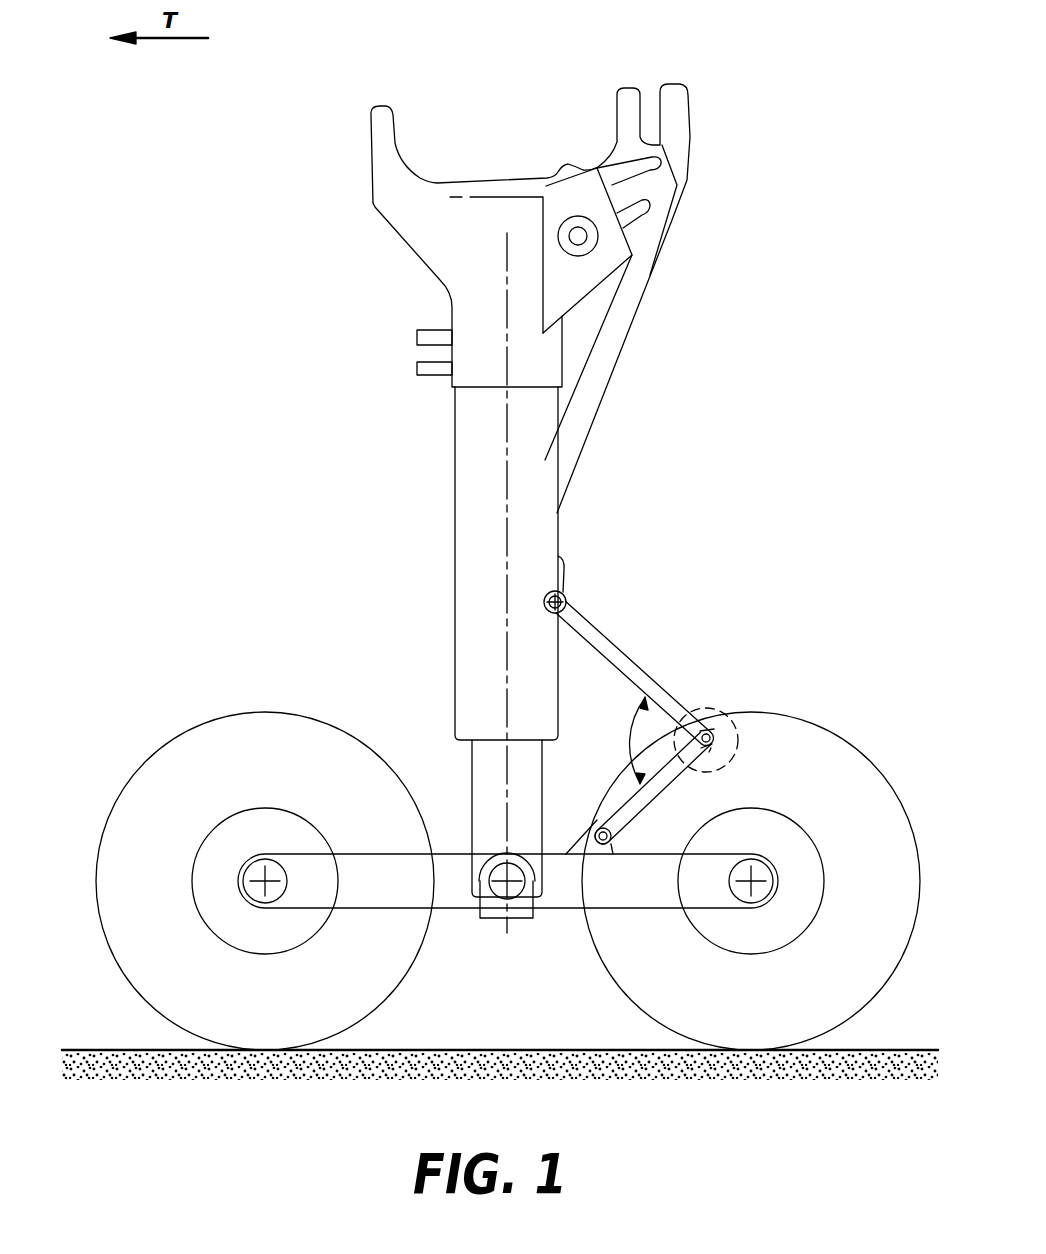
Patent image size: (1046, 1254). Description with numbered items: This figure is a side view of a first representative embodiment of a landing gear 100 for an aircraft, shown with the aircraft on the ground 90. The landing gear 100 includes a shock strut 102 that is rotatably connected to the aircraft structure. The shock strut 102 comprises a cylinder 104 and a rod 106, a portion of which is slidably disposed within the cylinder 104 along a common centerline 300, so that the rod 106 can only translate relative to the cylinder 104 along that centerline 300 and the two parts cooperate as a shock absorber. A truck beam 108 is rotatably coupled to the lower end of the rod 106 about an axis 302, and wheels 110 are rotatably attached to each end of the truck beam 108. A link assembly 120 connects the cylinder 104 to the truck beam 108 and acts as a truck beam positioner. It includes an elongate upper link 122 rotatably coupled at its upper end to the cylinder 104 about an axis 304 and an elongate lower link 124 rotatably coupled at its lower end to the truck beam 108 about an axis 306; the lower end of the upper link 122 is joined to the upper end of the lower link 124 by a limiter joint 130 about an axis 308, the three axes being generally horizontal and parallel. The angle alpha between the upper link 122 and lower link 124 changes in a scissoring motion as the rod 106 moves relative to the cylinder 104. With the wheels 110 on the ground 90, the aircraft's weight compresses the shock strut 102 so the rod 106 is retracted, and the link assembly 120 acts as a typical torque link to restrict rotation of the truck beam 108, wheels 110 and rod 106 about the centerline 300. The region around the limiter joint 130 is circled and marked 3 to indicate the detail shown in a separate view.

The landing gear 100 is at (256, 371).
The shock strut 102 is at (578, 535).
The cylinder 104 is at (455, 627).
The rod 106 is at (473, 790).
The truck beam 108 is at (453, 909).
The wheels 110 is at (142, 768).
The link assembly 120 is at (678, 716).
The upper link 122 is at (600, 624).
The lower link 124 is at (633, 788).
The limiter joint 130 is at (720, 738).
The centerline 300 is at (510, 548).
The axis 302 is at (508, 888).
The axis 304 is at (561, 600).
The axis 306 is at (597, 818).
The axis 308 is at (705, 736).
The ground 90 is at (113, 1050).
The detail view reference 3 is at (720, 710).